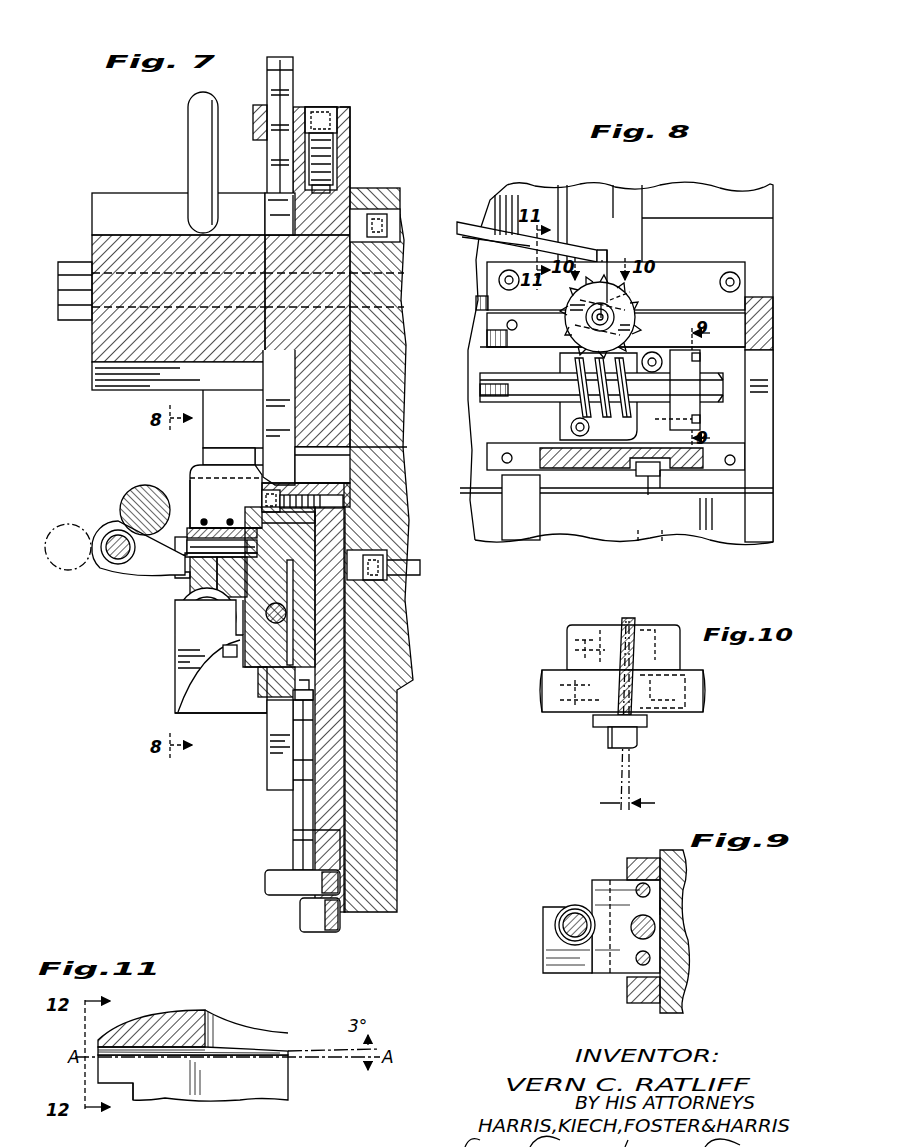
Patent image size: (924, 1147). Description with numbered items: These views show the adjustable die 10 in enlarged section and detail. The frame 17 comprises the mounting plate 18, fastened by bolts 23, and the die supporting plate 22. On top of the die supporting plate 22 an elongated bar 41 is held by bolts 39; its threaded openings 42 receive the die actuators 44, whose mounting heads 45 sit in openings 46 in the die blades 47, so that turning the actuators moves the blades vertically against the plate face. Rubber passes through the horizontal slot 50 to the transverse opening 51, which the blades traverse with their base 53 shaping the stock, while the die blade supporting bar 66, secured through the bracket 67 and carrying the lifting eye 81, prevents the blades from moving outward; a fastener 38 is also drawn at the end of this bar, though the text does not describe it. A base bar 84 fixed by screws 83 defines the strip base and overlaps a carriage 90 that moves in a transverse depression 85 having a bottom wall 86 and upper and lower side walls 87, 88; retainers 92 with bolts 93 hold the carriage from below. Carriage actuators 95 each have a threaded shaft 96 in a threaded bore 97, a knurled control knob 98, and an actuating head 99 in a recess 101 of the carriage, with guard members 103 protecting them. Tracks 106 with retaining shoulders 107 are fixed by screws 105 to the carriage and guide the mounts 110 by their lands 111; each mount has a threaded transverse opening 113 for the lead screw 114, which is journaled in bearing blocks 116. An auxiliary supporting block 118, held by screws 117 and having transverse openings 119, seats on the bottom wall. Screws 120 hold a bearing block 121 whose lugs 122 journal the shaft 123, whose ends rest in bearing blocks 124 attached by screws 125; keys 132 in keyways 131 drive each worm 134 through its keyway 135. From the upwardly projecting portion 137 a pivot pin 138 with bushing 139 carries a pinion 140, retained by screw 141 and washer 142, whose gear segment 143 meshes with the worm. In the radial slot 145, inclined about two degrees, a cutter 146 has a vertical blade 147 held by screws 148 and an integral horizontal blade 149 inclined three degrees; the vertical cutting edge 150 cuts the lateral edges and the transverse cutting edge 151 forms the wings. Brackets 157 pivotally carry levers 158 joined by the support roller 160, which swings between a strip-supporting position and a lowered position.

In FIG. 7, the adjustable die 10 is at (362, 95).
In FIG. 8, the adjustable die 10 is at (598, 185).
In FIG. 7, the frame 17 is at (366, 165).
In FIG. 8, the frame 17 is at (708, 540).
In FIG. 7, the mounting plate 18 is at (380, 190).
In FIG. 7, the die supporting plate 22 is at (352, 145).
In FIG. 8, the die supporting plate 22 is at (661, 185).
In FIG. 7, the bolts 23 is at (400, 213).
In FIG. 7, the bolt 38 is at (60, 298).
In FIG. 7, the bolts 39 is at (316, 107).
In FIG. 7, the elongated bar 41 is at (345, 107).
In FIG. 7, the threaded openings 42 is at (262, 105).
In FIG. 7, the die actuators 44 is at (285, 57).
In FIG. 7, the mounting heads 45 is at (266, 195).
In FIG. 7, the openings 46 is at (270, 235).
In FIG. 7, the die blades 47 is at (268, 380).
In FIG. 8, the die blades 47 is at (565, 185).
In FIG. 7, the horizontal slot 50 is at (398, 448).
In FIG. 7, the transverse opening 51 is at (350, 475).
In FIG. 7, the base 53 is at (292, 475).
In FIG. 7, the die blade supporting bar 66 is at (92, 240).
In FIG. 7, the bracket 67 is at (92, 378).
In FIG. 7, the lifting eye 81 is at (190, 105).
In FIG. 7, the screws 83 is at (340, 492).
In FIG. 8, the screws 83 is at (732, 272).
In FIG. 7, the base bar 84 is at (297, 490).
In FIG. 8, the base bar 84 is at (705, 268).
In FIG. 7, the transverse depression 85 is at (305, 585).
In FIG. 7, the bottom wall 86 is at (318, 640).
In FIG. 9, the bottom wall 86 is at (662, 905).
In FIG. 7, the upper side wall 87 is at (330, 512).
In FIG. 8, the upper side wall 87 is at (476, 300).
In FIG. 7, the lower side wall 88 is at (315, 725).
In FIG. 8, the lower side wall 88 is at (480, 493).
In FIG. 7, the carriage 90 is at (320, 655).
In FIG. 8, the carriage 90 is at (480, 353).
In FIG. 9, the carriage 90 is at (683, 985).
In FIG. 7, the retainers 92 is at (268, 752).
In FIG. 8, the retainers 92 is at (518, 528).
In FIG. 7, the bolts 93 is at (268, 770).
In FIG. 8, the bolts 93 is at (510, 512).
In FIG. 7, the carriage actuators 95 is at (267, 897).
In FIG. 7, the threaded shaft 96 is at (295, 835).
In FIG. 8, the threaded shaft 96 is at (663, 535).
In FIG. 7, the threaded bore 97 is at (295, 808).
In FIG. 8, the threaded bore 97 is at (636, 535).
In FIG. 7, the knurled control knob 98 is at (265, 882).
In FIG. 7, the actuating head 99 is at (315, 705).
In FIG. 8, the actuating head 99 is at (648, 478).
In FIG. 7, the recess 101 is at (290, 700).
In FIG. 8, the recess 101 is at (662, 475).
In FIG. 7, the guard members 103 is at (300, 925).
In FIG. 7, the screws 105 is at (338, 530).
In FIG. 8, the screws 105 is at (508, 324).
In FIG. 7, the tracks 106 is at (338, 547).
In FIG. 8, the tracks 106 is at (490, 340).
In FIG. 9, the tracks 106 is at (625, 860).
In FIG. 7, the retaining shoulders 107 is at (280, 587).
In FIG. 9, the retaining shoulders 107 is at (640, 858).
In FIG. 7, the mounts 110 is at (238, 663).
In FIG. 8, the mounts 110 is at (556, 418).
In FIG. 9, the mounts 110 is at (594, 975).
In FIG. 7, the lands 111 is at (353, 670).
In FIG. 9, the lands 111 is at (670, 850).
In FIG. 7, the threaded transverse opening 113 is at (300, 610).
In FIG. 7, the lead screw 114 is at (300, 625).
In FIG. 8, the lead screw 114 is at (482, 374).
In FIG. 9, the lead screw 114 is at (685, 945).
In FIG. 7, the bearing blocks 116 is at (245, 690).
In FIG. 8, the screws 117 is at (700, 358).
In FIG. 9, the screws 117 is at (652, 888).
In FIG. 8, the auxiliary supporting block 118 is at (700, 388).
In FIG. 9, the auxiliary supporting block 118 is at (594, 885).
In FIG. 9, the transverse openings 119 is at (657, 927).
In FIG. 7, the screws 120 is at (180, 704).
In FIG. 8, the screws 120 is at (654, 352).
In FIG. 7, the bearing block 121 is at (195, 695).
In FIG. 8, the bearing block 121 is at (600, 440).
In FIG. 8, the lugs 122 is at (566, 382).
In FIG. 7, the shaft 123 is at (198, 645).
In FIG. 8, the shaft 123 is at (525, 380).
In FIG. 9, the shaft 123 is at (572, 907).
In FIG. 8, the bearing blocks 124 is at (765, 398).
In FIG. 8, the screws 125 is at (767, 363).
In FIG. 8, the keyways 131 is at (482, 395).
In FIG. 7, the keys 132 is at (200, 622).
In FIG. 9, the keys 132 is at (565, 925).
In FIG. 7, the worm 134 is at (178, 670).
In FIG. 8, the worm 134 is at (550, 380).
In FIG. 7, the keyway 135 is at (272, 618).
In FIG. 7, the upwardly projecting portion 137 is at (226, 577).
In FIG. 7, the pivot pin 138 is at (188, 582).
In FIG. 10, the pivot pin 138 is at (625, 618).
In FIG. 7, the bushing 139 is at (190, 590).
In FIG. 7, the pinion 140 is at (180, 620).
In FIG. 8, the pinion 140 is at (565, 305).
In FIG. 10, the pinion 140 is at (690, 690).
In FIG. 7, the screw 141 is at (175, 548).
In FIG. 10, the screw 141 is at (614, 748).
In FIG. 7, the washer 142 is at (165, 558).
In FIG. 10, the washer 142 is at (600, 722).
In FIG. 8, the gear segment 143 is at (628, 305).
In FIG. 10, the gear segment 143 is at (718, 640).
In FIG. 8, the radial slot 145 is at (609, 290).
In FIG. 10, the radial slot 145 is at (672, 610).
In FIG. 7, the cutter 146 is at (198, 463).
In FIG. 8, the cutter 146 is at (483, 258).
In FIG. 11, the cutter 146 is at (250, 1020).
In FIG. 7, the vertical blade 147 is at (190, 490).
In FIG. 8, the vertical blade 147 is at (609, 262).
In FIG. 10, the vertical blade 147 is at (638, 740).
In FIG. 11, the vertical blade 147 is at (155, 1085).
In FIG. 7, the screws 148 is at (229, 520).
In FIG. 8, the screws 148 is at (640, 287).
In FIG. 10, the screws 148 is at (665, 635).
In FIG. 7, the horizontal blade 149 is at (240, 460).
In FIG. 8, the horizontal blade 149 is at (468, 222).
In FIG. 11, the horizontal blade 149 is at (168, 1012).
In FIG. 7, the vertical cutting edge 150 is at (237, 480).
In FIG. 8, the vertical cutting edge 150 is at (600, 245).
In FIG. 11, the vertical cutting edge 150 is at (98, 1075).
In FIG. 7, the transverse cutting edge 151 is at (262, 445).
In FIG. 8, the transverse cutting edge 151 is at (462, 240).
In FIG. 11, the transverse cutting edge 151 is at (98, 1050).
In FIG. 7, the brackets 157 is at (70, 548).
In FIG. 8, the brackets 157 is at (760, 297).
In FIG. 7, the lever 158 is at (118, 526).
In FIG. 7, the support roller 160 is at (136, 490).